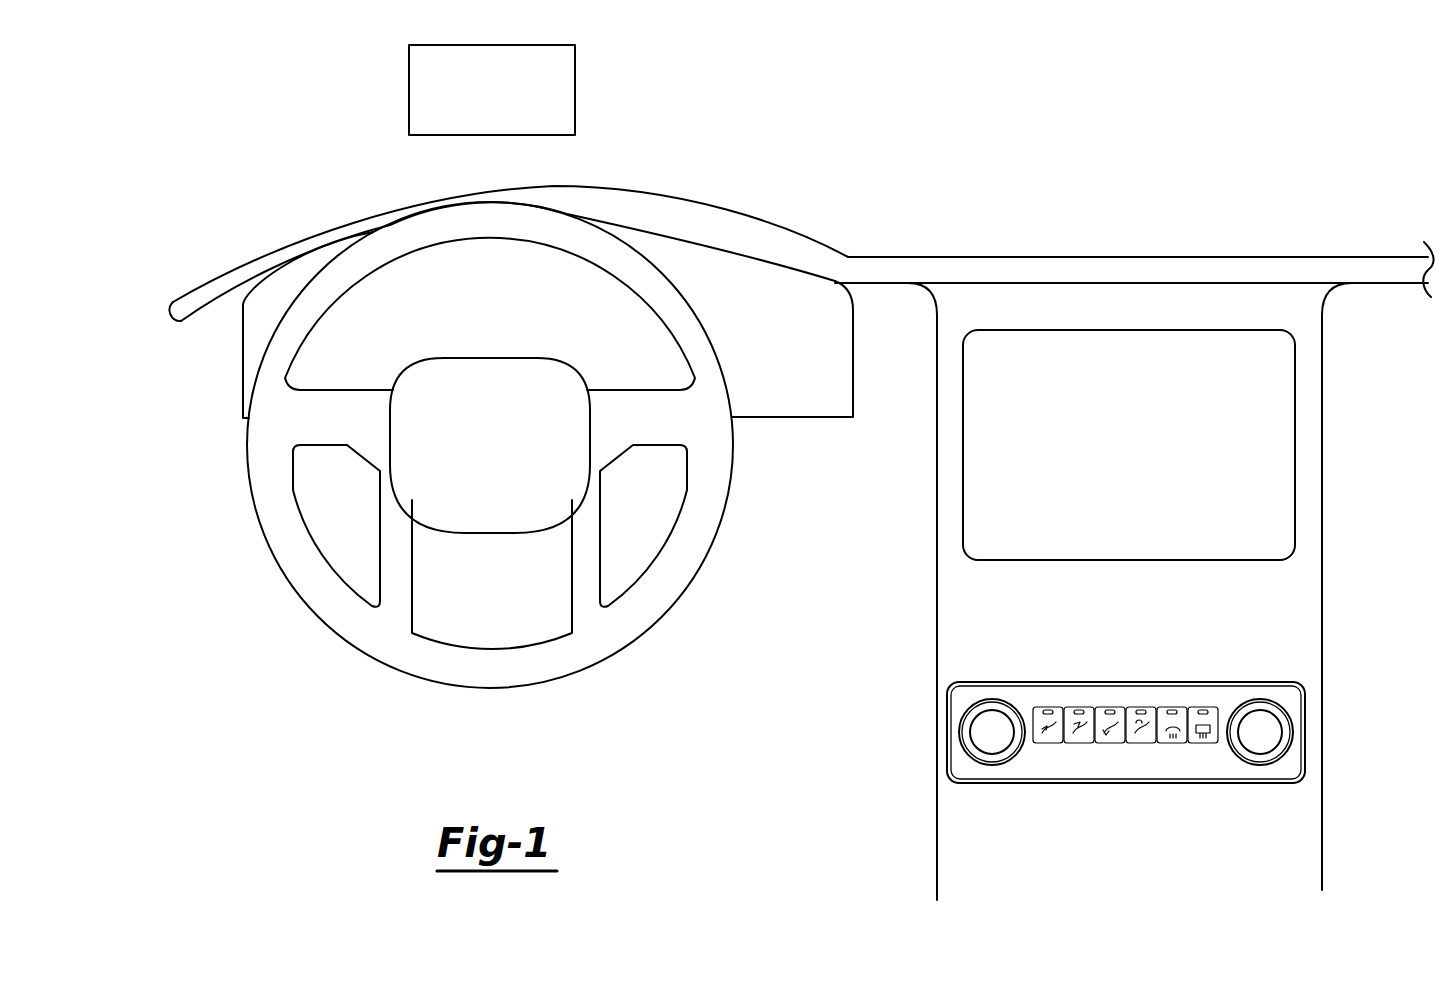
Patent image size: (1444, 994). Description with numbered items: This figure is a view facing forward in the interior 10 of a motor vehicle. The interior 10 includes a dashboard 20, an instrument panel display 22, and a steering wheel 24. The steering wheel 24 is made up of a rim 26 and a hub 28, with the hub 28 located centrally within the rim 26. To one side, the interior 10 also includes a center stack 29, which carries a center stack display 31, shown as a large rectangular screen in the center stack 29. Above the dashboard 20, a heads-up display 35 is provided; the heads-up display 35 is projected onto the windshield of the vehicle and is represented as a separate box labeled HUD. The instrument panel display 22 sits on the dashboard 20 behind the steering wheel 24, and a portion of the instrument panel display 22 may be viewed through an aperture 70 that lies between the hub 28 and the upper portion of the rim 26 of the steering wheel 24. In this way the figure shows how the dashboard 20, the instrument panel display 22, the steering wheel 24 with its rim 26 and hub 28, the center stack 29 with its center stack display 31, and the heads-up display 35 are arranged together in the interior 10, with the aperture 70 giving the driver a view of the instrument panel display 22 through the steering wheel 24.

The interior 10 is at (1122, 116).
The dashboard 20 is at (747, 206).
The instrument panel display 22 is at (241, 372).
The steering wheel 24 is at (343, 635).
The rim 26 is at (275, 553).
The hub 28 is at (494, 535).
The center stack 29 is at (1327, 460).
The center stack display 31 is at (1118, 457).
The heads-up display 35 is at (406, 88).
The aperture 70 is at (498, 312).